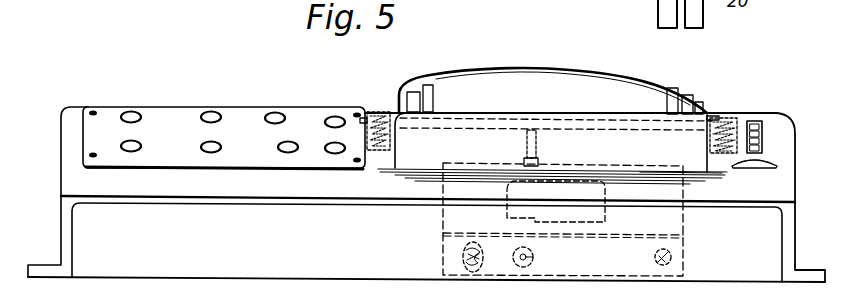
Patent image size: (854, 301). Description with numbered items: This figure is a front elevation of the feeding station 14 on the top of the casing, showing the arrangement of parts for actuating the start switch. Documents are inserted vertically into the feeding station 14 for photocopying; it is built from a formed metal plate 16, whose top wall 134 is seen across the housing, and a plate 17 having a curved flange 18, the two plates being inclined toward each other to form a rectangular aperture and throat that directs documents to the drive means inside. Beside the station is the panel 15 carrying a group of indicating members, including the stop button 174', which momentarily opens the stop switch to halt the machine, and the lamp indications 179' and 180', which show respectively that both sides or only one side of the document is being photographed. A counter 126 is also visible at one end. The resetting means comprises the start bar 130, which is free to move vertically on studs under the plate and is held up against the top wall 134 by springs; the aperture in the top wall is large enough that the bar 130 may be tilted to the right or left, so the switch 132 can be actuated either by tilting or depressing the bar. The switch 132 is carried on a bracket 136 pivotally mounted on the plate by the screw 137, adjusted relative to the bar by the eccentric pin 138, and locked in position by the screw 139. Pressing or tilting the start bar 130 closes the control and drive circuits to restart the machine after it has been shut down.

The panel 15 is at (244, 116).
The stop button 174' is at (330, 106).
The both-sides indicator 179' is at (84, 142).
The one-side indicator 180' is at (239, 168).
The counter 126 is at (760, 133).
The feeding station 14 is at (554, 131).
The top wall 134 is at (477, 112).
The formed metal plate 16 is at (432, 95).
The start bar 130 is at (634, 89).
The curved flange 18 is at (480, 166).
The bracket 136 is at (442, 218).
The switch 132 is at (607, 215).
The plate 17 is at (697, 188).
The screw 139 is at (462, 257).
The eccentric pin 138 is at (536, 257).
The screw 137 is at (674, 257).